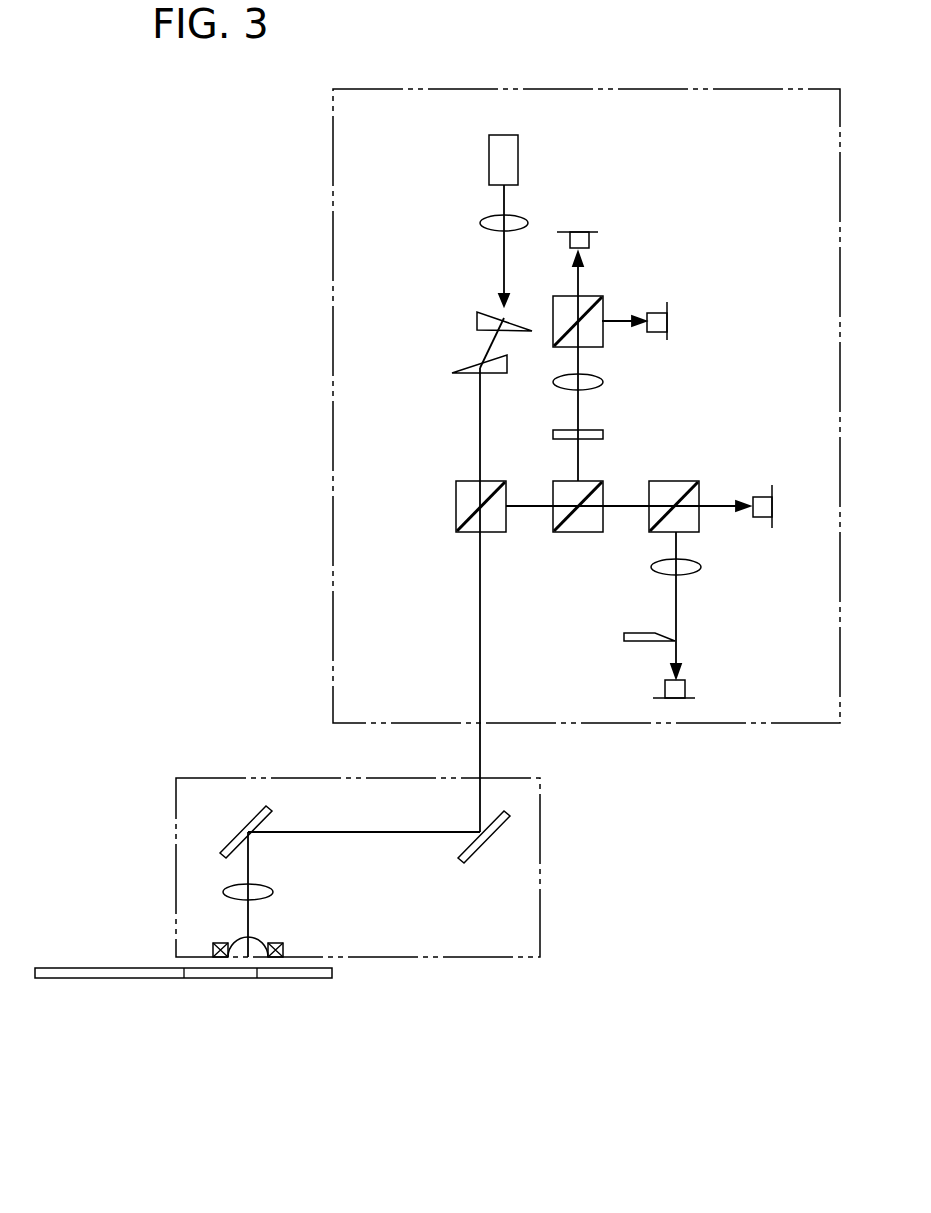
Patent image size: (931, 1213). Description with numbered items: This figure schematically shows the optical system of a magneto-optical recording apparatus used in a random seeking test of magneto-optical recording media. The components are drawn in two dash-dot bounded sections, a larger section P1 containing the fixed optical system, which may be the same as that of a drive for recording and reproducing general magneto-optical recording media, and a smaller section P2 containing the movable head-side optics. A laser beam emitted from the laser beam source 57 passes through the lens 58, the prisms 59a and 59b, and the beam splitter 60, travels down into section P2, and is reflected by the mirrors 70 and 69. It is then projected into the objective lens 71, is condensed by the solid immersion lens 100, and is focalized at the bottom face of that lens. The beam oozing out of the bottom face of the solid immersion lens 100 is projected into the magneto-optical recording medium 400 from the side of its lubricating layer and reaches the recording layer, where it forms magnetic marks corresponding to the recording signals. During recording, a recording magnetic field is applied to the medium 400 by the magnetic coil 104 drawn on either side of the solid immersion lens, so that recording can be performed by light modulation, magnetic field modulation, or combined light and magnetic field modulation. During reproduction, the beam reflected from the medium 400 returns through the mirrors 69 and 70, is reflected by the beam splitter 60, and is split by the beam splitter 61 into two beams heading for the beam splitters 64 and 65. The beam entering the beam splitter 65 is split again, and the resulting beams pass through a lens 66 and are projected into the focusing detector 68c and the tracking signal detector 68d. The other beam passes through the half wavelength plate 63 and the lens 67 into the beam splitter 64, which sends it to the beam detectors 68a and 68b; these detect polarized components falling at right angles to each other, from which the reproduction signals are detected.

The laser beam source 57 is at (489, 151).
The lens 58 is at (480, 221).
The prism 59a is at (477, 313).
The prism 59b is at (455, 370).
The beam splitter 60 is at (456, 502).
The beam splitter 61 is at (573, 533).
The ½ wavelength plate 63 is at (604, 434).
The beam splitter 64 is at (605, 305).
The beam splitter 65 is at (700, 527).
The condenser lens 66 is at (690, 572).
The lens 67 is at (604, 382).
The beam detector 68a is at (581, 232).
The beam detector 68b is at (668, 316).
The focusing detector 68c is at (686, 688).
The tracking signal detector 68d is at (761, 495).
The mirror 69 is at (256, 829).
The mirror 70 is at (475, 845).
The objective lens 71 is at (273, 893).
The solid immersion lens (SIL) 100 is at (264, 944).
The magnetic coil 104 is at (211, 950).
The magneto-optical recording medium 400 is at (275, 978).
The fixed optical section P1 is at (333, 424).
The movable optical section P2 is at (208, 775).